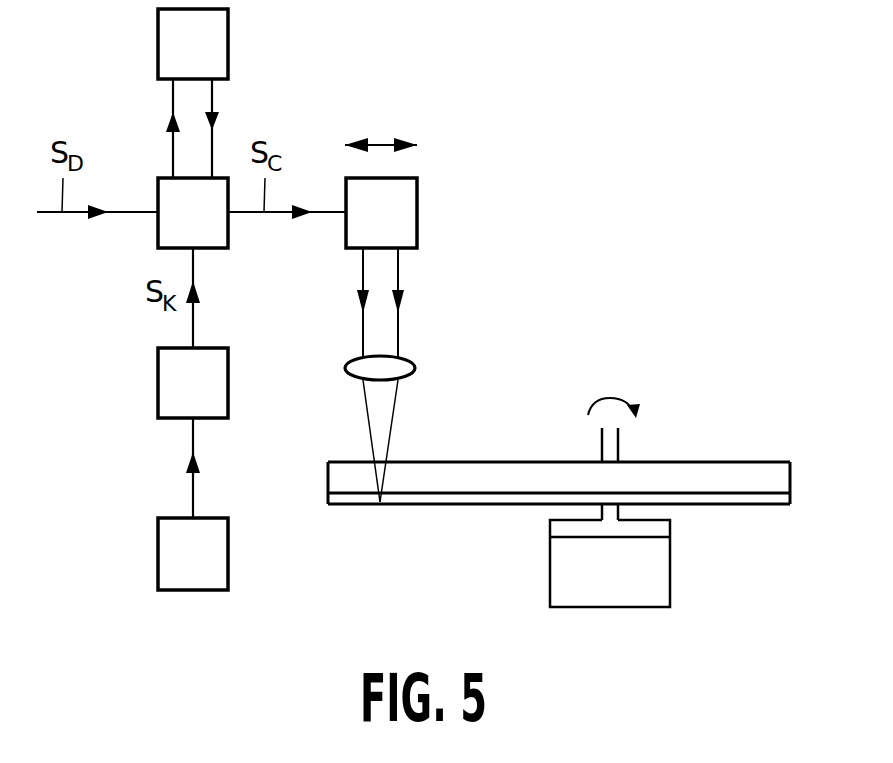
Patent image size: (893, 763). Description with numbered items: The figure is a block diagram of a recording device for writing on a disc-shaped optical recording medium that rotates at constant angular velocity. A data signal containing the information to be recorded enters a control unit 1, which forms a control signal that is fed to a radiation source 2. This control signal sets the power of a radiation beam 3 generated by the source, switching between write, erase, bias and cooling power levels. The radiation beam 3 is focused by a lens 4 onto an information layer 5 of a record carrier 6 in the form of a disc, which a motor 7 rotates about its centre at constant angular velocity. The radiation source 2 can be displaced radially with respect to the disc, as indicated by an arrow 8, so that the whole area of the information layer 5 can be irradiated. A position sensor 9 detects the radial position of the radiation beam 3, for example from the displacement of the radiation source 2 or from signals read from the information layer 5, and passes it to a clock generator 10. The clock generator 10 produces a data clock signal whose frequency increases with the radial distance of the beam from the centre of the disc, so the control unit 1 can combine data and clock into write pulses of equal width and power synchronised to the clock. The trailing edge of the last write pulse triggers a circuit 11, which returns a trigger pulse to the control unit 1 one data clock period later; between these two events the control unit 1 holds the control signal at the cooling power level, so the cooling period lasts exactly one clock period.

The control unit 1 is at (217, 237).
The radiation source 2 is at (417, 203).
The radiation beam 3 is at (398, 273).
The lens 4 is at (415, 366).
The information layer 5 is at (352, 505).
The record carrier 6 is at (438, 505).
The motor 7 is at (550, 573).
The arrow 8 is at (380, 142).
The position sensor 9 is at (157, 558).
The clock generator 10 is at (157, 390).
The circuit 11 is at (165, 42).